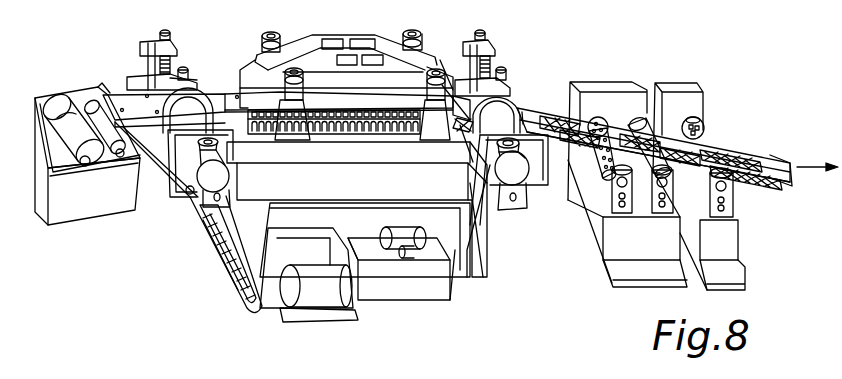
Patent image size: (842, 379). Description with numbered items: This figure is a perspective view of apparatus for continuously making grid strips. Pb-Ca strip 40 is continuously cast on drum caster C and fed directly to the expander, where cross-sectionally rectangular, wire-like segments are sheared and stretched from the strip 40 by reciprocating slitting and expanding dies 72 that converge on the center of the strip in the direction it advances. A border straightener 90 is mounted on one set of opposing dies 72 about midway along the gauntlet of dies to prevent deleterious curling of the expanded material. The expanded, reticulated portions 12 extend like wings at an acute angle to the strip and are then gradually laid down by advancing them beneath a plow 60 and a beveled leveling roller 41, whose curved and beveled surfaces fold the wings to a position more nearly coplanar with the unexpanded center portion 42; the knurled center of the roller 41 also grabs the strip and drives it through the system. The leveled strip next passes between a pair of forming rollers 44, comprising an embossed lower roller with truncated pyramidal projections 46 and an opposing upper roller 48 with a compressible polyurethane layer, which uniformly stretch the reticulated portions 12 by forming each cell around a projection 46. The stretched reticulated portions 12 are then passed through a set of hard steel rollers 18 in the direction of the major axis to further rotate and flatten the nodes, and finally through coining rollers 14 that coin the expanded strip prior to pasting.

The Pb-Ca strip 40 is at (96, 110).
The drum caster C is at (80, 200).
The beveled leveling roller 41 is at (468, 80).
The border straightener 90 is at (332, 128).
The slitting and expanding dies 72 is at (388, 128).
The plow 60 is at (462, 128).
The center portion 42 is at (540, 128).
The reticulated portions 12 is at (540, 116).
The upper roller 48 is at (598, 118).
The forming rollers 44 is at (616, 120).
The rollers 18 is at (636, 215).
The coining rollers 14 is at (703, 128).
The truncated pyramidal projections 46 is at (598, 178).